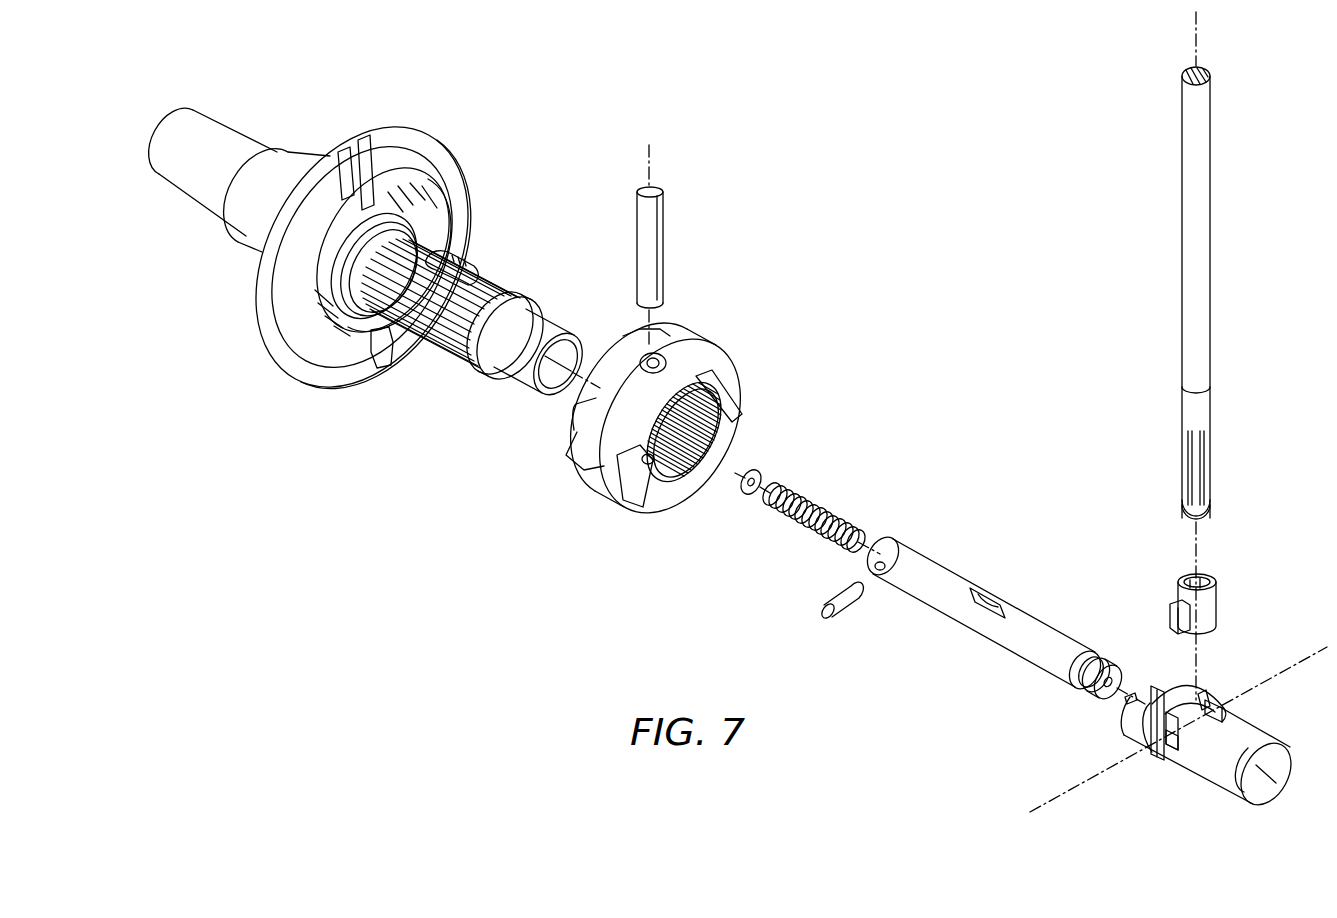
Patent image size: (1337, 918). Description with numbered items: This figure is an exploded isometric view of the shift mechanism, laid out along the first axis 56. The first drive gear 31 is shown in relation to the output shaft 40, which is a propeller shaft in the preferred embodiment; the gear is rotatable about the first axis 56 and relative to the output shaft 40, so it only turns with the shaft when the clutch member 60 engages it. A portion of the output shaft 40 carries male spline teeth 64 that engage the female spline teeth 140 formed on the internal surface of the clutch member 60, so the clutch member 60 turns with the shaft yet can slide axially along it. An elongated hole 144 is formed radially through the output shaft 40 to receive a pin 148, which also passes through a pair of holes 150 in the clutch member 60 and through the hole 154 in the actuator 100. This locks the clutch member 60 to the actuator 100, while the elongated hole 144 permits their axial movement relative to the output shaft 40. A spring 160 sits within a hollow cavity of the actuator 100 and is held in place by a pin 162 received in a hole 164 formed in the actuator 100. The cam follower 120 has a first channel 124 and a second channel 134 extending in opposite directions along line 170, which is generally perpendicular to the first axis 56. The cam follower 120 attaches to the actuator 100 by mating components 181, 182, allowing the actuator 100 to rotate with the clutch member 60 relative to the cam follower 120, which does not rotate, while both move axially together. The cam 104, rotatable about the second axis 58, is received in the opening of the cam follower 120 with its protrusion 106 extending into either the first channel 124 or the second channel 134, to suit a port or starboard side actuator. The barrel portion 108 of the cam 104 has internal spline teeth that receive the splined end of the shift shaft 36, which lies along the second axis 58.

The output shaft 40 is at (240, 142).
The first drive gear 31 is at (443, 162).
The elongated hole 144 is at (460, 272).
The male spline teeth 64 is at (496, 280).
The pin 148 is at (658, 218).
The holes 150 is at (652, 350).
The clutch member 60 is at (687, 367).
The female spline teeth 140 is at (697, 482).
The spring 160 is at (817, 498).
The hole 164 is at (865, 580).
The pin 162 is at (847, 617).
The hole 154 is at (985, 597).
The actuator 100 is at (1027, 653).
The mating component 181 is at (1110, 667).
The protrusion 106 is at (1168, 622).
The barrel portion 108 is at (1210, 603).
The cam 104 is at (1233, 573).
The second channel 134 is at (1213, 700).
The mating component 182 is at (1142, 723).
The line 170 is at (1045, 802).
The first channel 124 is at (1149, 757).
The cam follower 120 is at (1217, 778).
The first axis 56 is at (1308, 797).
The shift shaft 36 is at (1199, 233).
The second axis 58 is at (1197, 29).